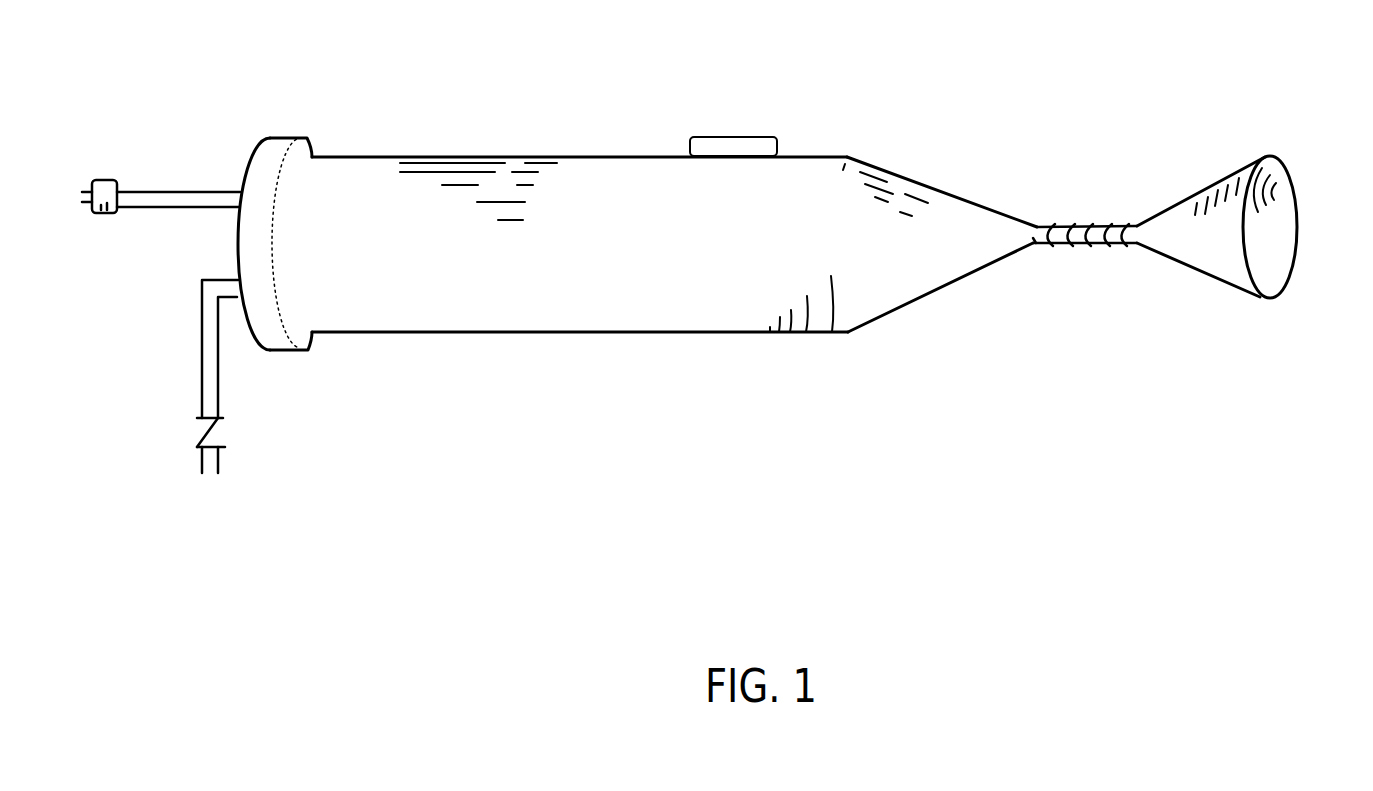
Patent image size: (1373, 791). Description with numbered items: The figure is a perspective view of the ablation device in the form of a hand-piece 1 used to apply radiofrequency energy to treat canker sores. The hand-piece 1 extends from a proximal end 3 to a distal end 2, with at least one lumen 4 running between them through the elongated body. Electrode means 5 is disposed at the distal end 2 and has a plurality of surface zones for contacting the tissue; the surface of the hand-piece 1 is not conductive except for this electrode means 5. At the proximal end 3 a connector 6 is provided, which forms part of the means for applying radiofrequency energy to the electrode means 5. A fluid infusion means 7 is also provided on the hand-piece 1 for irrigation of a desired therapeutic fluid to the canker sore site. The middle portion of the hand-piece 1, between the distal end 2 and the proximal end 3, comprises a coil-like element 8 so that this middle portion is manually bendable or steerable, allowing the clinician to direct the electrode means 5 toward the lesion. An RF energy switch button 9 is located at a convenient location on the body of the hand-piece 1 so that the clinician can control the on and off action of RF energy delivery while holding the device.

The hand-piece 1 is at (520, 150).
The distal end 2 is at (1275, 148).
The proximal end 3 is at (295, 128).
The lumen 4 is at (800, 193).
The electrode means 5 is at (1285, 178).
The connector 6 is at (115, 168).
The fluid infusion means 7 is at (195, 407).
The coil-like element 8 is at (1098, 215).
The RF energy switch button 9 is at (763, 127).